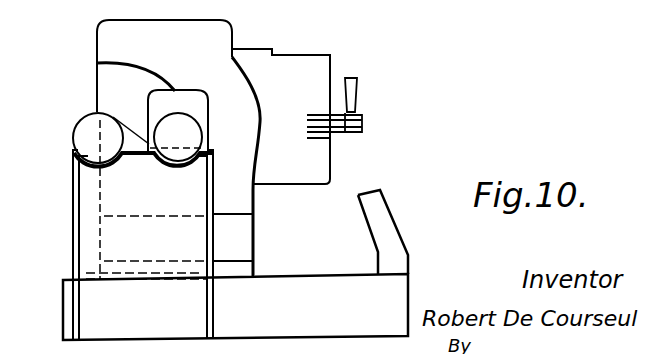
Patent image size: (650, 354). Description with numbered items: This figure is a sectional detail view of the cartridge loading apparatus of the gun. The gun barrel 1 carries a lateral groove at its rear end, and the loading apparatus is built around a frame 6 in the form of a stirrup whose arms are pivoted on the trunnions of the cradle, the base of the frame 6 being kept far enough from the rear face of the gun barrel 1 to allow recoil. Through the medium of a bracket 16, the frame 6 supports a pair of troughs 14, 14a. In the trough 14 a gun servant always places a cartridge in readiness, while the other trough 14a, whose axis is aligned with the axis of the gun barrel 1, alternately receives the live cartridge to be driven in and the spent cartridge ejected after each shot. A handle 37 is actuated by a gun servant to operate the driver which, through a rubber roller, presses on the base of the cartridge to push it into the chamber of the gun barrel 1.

The gun barrel 1 is at (97, 43).
The trough 14 is at (87, 168).
The trough 14a is at (173, 168).
The bracket 16 is at (78, 229).
The frame 6 is at (327, 259).
The handle 37 is at (350, 91).